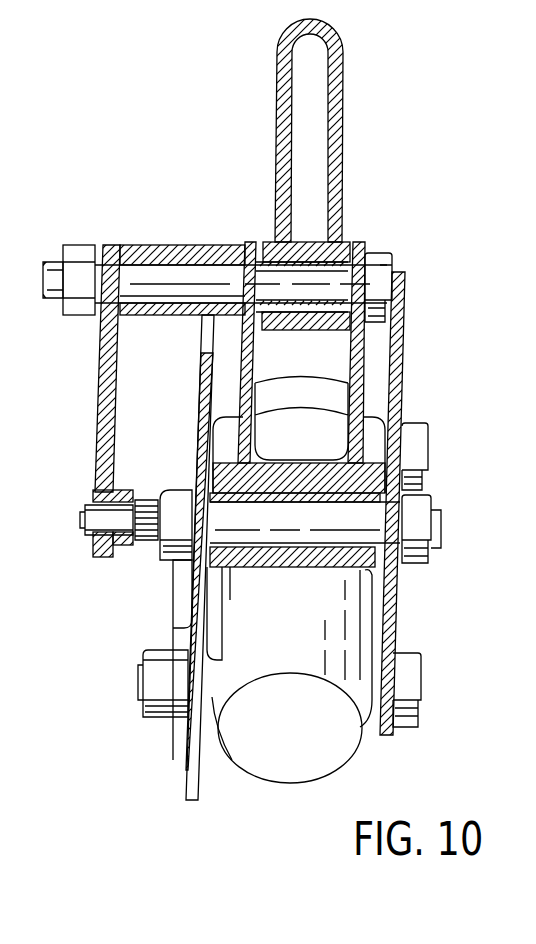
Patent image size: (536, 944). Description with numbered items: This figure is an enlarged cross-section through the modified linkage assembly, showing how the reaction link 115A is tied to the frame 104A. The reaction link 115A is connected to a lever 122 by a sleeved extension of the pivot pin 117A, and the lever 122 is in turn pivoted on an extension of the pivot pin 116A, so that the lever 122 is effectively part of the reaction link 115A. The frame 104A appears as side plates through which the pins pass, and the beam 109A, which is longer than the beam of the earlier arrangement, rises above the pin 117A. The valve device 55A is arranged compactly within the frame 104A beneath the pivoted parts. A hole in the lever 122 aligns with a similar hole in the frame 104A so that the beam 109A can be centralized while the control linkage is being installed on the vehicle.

The beam 109A is at (345, 136).
The pivot pin 117A is at (45, 260).
The lever 122 is at (100, 362).
The pivot pin 116A is at (85, 515).
The reaction link 115A is at (365, 377).
The frame 104A is at (188, 790).
The valve device 55A is at (253, 775).